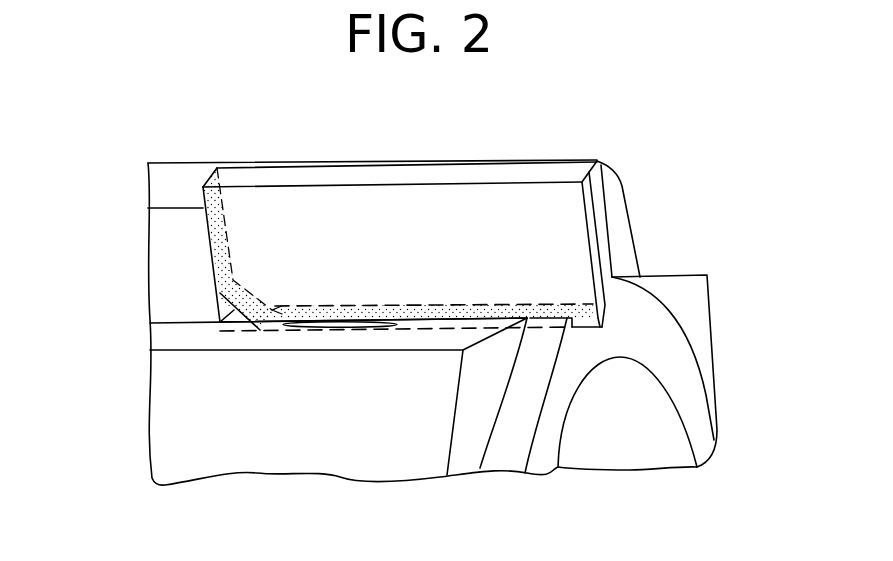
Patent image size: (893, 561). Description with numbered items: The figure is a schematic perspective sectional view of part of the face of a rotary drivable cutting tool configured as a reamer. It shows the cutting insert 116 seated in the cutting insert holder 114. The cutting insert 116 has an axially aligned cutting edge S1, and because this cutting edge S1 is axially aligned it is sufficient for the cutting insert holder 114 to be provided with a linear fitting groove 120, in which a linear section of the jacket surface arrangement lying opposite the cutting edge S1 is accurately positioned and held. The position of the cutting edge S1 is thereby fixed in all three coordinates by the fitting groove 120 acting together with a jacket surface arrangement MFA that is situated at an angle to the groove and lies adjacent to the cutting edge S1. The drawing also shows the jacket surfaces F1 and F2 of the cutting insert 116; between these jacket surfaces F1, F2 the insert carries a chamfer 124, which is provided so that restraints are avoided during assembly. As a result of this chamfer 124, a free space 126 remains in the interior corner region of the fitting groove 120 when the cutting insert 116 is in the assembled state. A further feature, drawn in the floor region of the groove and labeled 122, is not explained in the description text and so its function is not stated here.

The cutting insert holder 114 is at (657, 307).
The cutting insert 116 is at (548, 229).
The cutting edge S1 is at (353, 190).
The jacket surface F1 is at (216, 224).
The jacket surface arrangement MFA is at (218, 248).
The free space 126 is at (221, 292).
The chamfer 124 is at (246, 300).
The jacket surface F2 is at (447, 318).
The elongated recess 122 is at (333, 325).
The fitting groove 120 is at (418, 323).